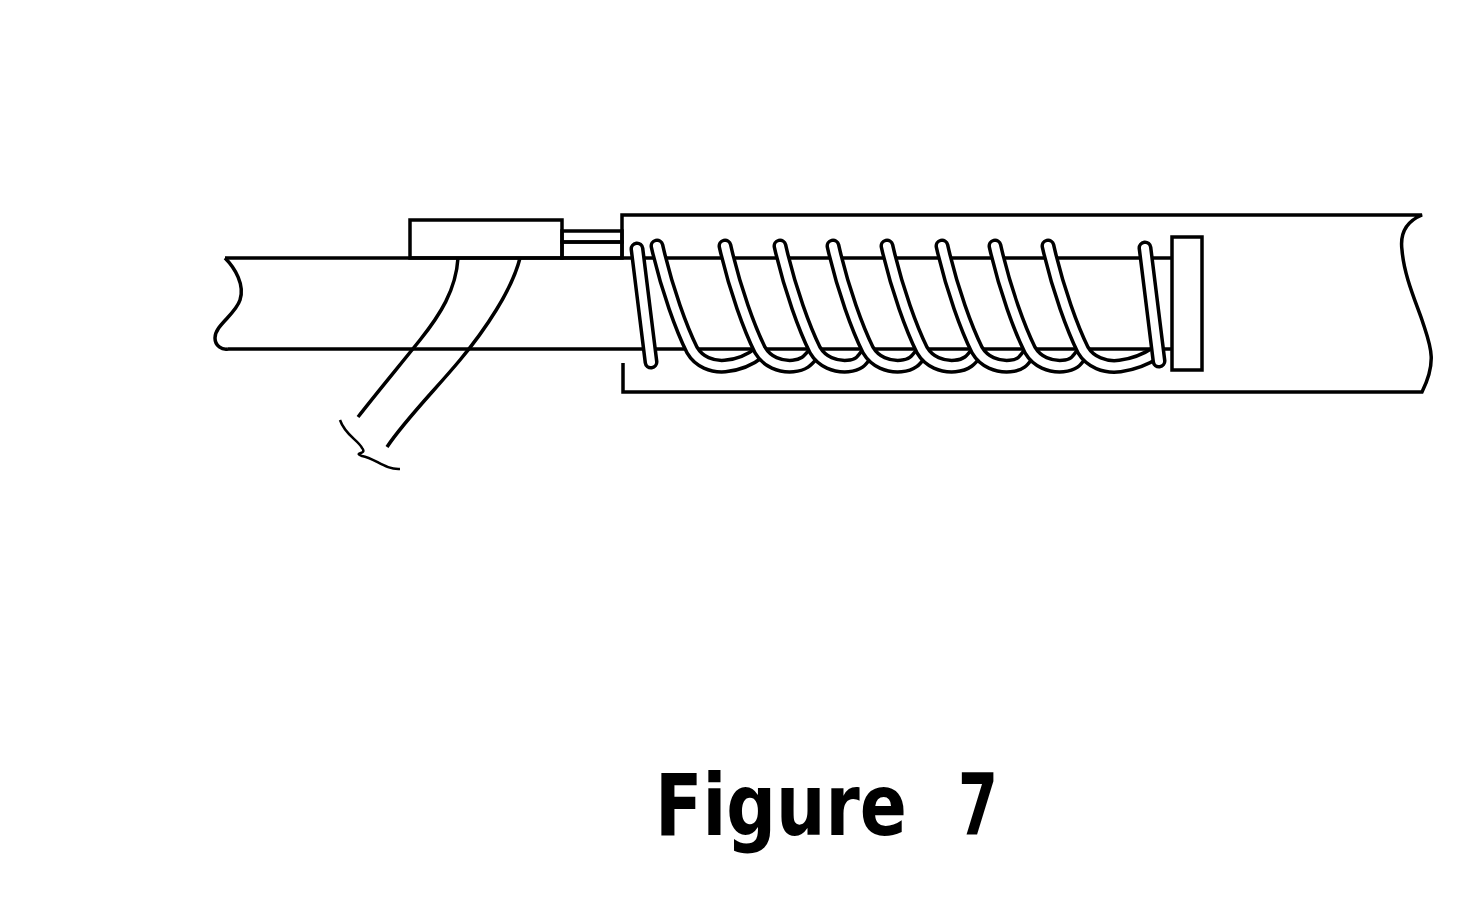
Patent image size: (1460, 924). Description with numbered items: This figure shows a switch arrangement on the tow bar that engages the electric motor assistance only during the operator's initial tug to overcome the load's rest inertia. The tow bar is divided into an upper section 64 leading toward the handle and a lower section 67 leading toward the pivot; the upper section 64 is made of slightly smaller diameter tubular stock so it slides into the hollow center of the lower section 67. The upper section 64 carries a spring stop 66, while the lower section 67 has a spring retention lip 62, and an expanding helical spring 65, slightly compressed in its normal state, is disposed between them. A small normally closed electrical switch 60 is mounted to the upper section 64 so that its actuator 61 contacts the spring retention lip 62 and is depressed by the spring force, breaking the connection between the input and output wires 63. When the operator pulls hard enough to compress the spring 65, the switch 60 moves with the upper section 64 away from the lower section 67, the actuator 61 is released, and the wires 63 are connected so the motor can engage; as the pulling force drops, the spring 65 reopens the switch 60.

The electrical switch 60 is at (480, 228).
The switch actuator 61 is at (588, 230).
The spring retention lip 62 is at (622, 217).
The input and output wires 63 is at (353, 458).
The upper section 64 is at (277, 333).
The expanding helical spring 65 is at (990, 357).
The spring stop 66 is at (1190, 358).
The lower section 67 is at (1300, 352).